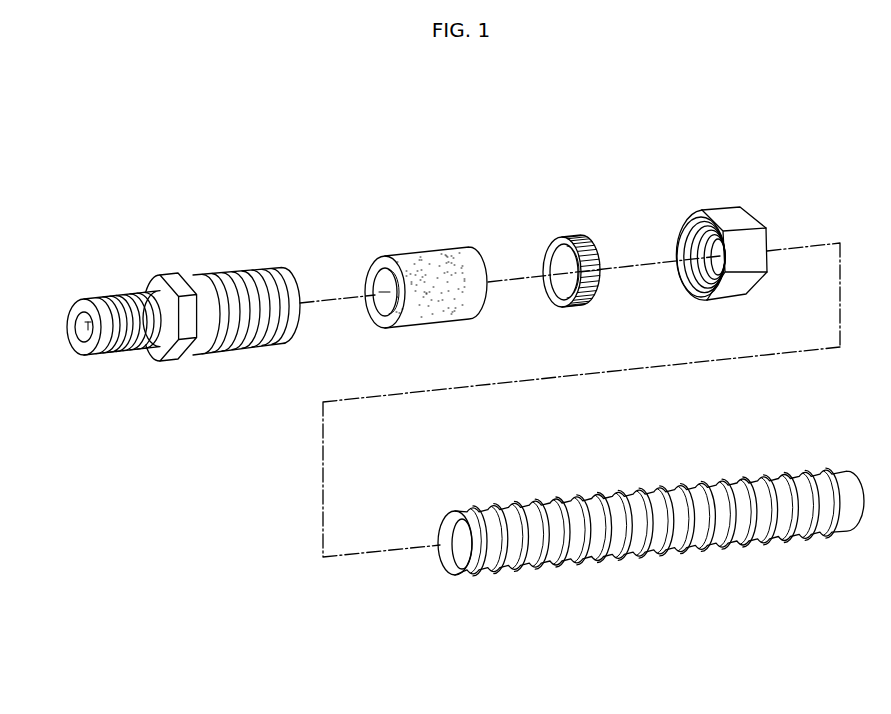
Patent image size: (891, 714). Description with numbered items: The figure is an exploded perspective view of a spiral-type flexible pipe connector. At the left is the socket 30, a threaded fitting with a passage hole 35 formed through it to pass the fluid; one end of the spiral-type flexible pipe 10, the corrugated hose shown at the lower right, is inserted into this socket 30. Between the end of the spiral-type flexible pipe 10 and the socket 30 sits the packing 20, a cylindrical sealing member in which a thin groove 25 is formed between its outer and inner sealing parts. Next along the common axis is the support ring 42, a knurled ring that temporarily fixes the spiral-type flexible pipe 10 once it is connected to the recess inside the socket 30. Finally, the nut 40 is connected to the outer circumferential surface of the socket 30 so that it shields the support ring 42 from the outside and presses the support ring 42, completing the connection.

The spiral-type flexible pipe 10 is at (626, 540).
The packing 20 is at (436, 265).
The thin groove 25 is at (389, 286).
The socket 30 is at (165, 251).
The passage hole 35 is at (85, 346).
The nut 40 is at (716, 217).
The support ring 42 is at (567, 236).